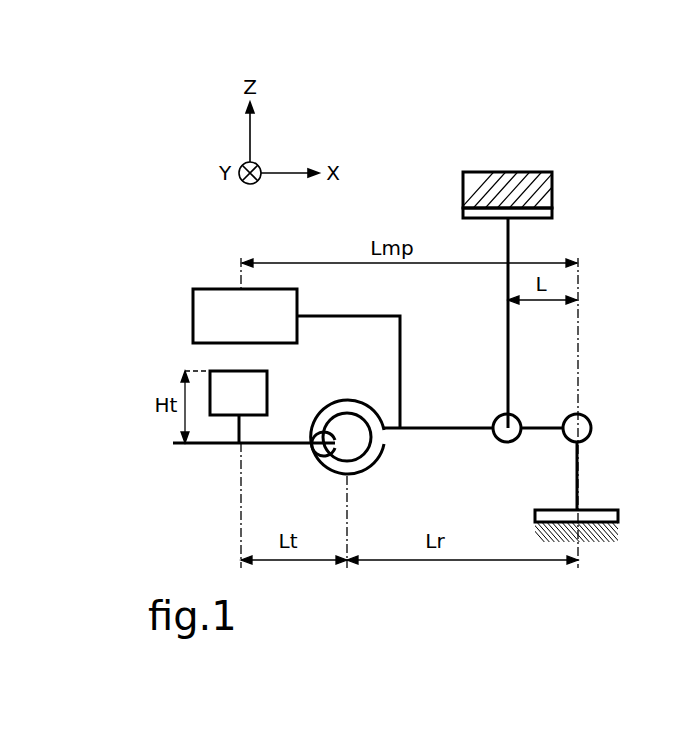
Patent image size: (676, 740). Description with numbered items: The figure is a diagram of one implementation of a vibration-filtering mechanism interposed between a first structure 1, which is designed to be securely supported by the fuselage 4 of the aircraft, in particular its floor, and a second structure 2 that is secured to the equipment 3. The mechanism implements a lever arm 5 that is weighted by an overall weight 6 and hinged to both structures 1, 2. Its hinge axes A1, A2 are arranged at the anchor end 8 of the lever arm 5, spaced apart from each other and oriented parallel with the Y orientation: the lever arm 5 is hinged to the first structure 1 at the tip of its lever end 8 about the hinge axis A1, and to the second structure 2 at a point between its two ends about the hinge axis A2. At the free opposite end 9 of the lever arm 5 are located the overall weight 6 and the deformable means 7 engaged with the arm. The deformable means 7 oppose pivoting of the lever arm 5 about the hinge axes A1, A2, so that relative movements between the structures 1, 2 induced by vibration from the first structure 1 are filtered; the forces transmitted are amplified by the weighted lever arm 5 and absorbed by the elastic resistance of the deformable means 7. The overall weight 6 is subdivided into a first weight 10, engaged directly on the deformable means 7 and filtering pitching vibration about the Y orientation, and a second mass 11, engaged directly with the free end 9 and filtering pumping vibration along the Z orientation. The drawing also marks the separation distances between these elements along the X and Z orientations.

The first structure 1 is at (603, 510).
The second structure 2 is at (552, 212).
The equipment 3 is at (552, 180).
The fuselage 4 is at (600, 542).
The lever arm 5 is at (448, 427).
The overall weight 6 is at (178, 352).
The deformable means 7 is at (372, 456).
The anchor end 8 is at (534, 451).
The free end 9 is at (211, 457).
The first weight 10 is at (238, 407).
The second mass 11 is at (296, 358).
The hinge axis A1 is at (591, 419).
The hinge axis A2 is at (519, 418).